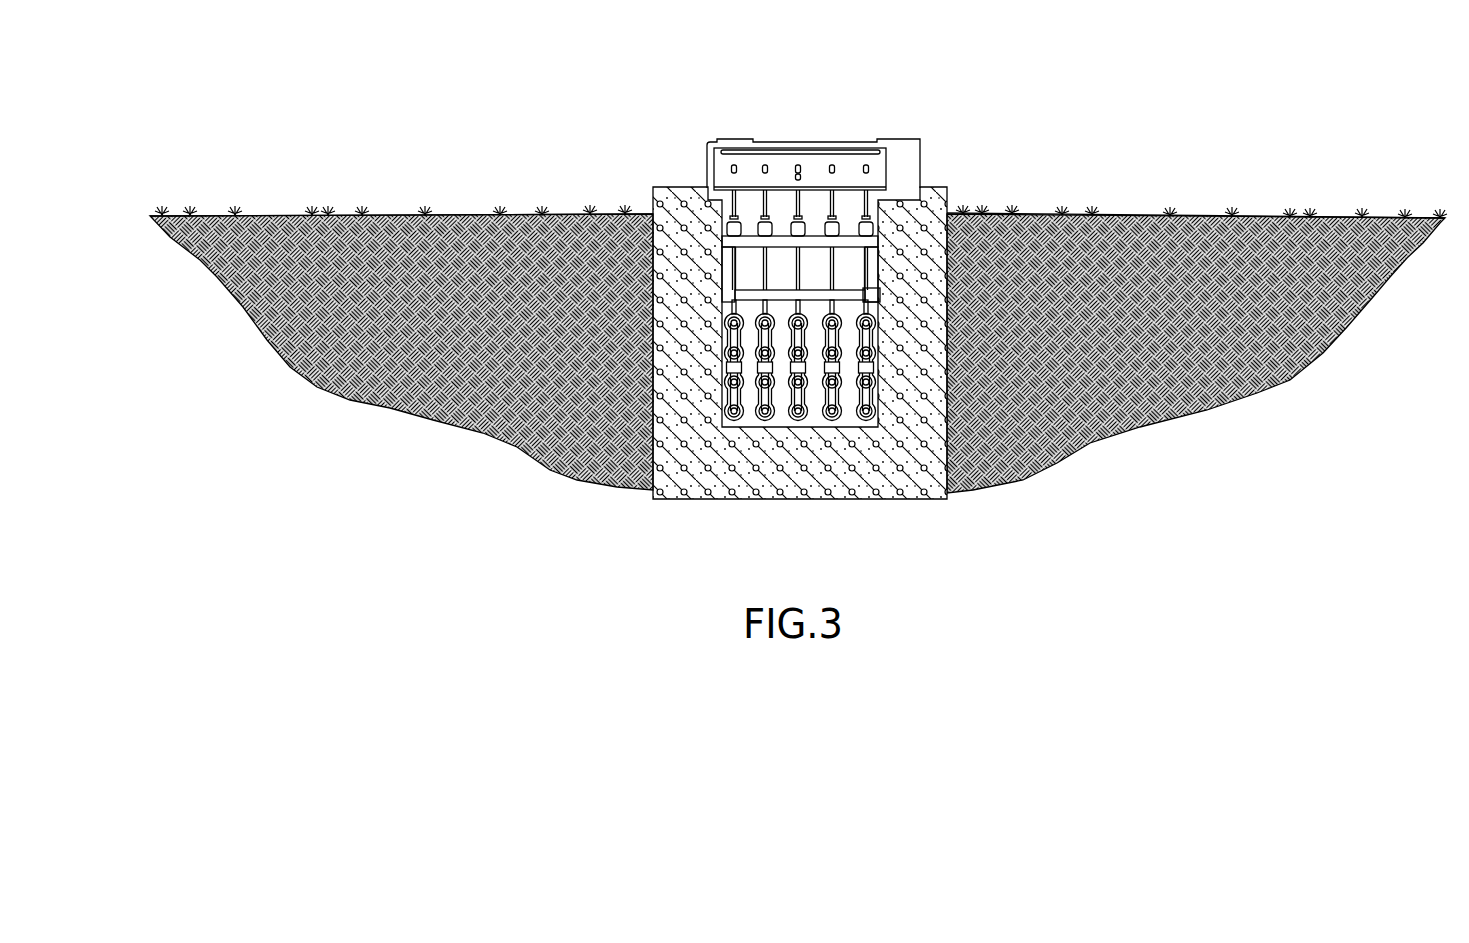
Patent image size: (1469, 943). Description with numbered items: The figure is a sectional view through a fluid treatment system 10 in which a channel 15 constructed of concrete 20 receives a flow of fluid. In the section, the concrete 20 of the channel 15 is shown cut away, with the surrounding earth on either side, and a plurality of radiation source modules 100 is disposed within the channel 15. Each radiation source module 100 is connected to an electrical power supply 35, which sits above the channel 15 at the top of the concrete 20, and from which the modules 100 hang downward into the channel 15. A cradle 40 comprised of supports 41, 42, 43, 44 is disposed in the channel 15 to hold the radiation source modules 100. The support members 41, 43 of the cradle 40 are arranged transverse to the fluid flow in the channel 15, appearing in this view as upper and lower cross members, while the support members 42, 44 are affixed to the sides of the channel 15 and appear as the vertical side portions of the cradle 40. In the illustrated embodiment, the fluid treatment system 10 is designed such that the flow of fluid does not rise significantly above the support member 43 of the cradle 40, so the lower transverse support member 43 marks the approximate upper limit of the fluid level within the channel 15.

The fluid treatment system 10 is at (1012, 127).
The channel 15 is at (778, 410).
The concrete 20 is at (700, 488).
The electrical power supply 35 is at (750, 167).
The cradle 40 is at (884, 251).
The support member 41 is at (778, 245).
The support member 42 is at (730, 248).
The support member 43 is at (853, 297).
The support member 44 is at (873, 295).
The radiation source module 100 is at (763, 232).